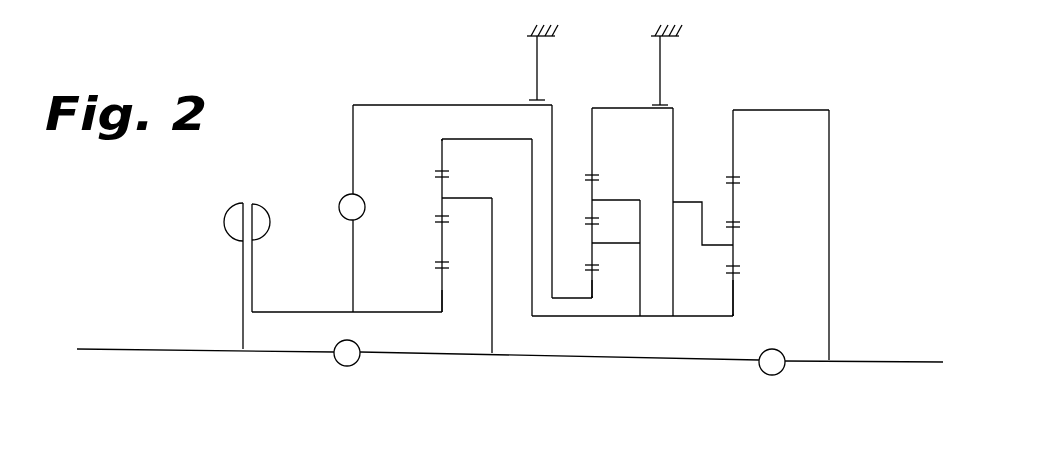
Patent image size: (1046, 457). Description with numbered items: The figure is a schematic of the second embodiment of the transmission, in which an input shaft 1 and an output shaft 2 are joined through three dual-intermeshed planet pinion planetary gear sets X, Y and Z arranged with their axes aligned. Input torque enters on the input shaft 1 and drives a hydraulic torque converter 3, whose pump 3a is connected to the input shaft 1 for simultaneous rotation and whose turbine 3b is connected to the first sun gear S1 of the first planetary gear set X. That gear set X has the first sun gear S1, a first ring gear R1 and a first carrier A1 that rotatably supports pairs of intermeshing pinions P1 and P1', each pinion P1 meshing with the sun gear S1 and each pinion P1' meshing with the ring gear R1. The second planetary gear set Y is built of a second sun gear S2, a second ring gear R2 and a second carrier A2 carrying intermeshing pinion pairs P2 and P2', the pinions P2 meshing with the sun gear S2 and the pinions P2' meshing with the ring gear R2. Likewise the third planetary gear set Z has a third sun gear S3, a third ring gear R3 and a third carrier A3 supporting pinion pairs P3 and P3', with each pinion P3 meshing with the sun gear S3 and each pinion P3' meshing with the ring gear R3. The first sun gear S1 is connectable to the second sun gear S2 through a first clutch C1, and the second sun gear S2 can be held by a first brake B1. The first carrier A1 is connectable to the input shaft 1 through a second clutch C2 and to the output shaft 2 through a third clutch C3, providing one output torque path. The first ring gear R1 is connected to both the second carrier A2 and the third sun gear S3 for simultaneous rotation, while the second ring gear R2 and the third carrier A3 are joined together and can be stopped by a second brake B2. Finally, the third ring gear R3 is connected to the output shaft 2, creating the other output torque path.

The input shaft 1 is at (133, 349).
The output shaft 2 is at (887, 362).
The hydraulic torque converter 3 is at (222, 223).
The pump 3a is at (233, 239).
The turbine 3b is at (270, 236).
The first clutch C1 is at (341, 198).
The second clutch C2 is at (357, 364).
The third clutch C3 is at (781, 372).
The first ring gear R1 is at (442, 152).
The pinion P1' is at (414, 206).
The first carrier A1 is at (492, 218).
The pinion P1 is at (413, 263).
The first sun gear S1 is at (440, 291).
The first brake B1 is at (533, 99).
The second brake B2 is at (664, 103).
The second ring gear R2 is at (592, 135).
The pinion P2' is at (620, 190).
The second carrier A2 is at (641, 217).
The pinion P2 is at (612, 258).
The second sun gear S2 is at (567, 298).
The third carrier A3 is at (702, 221).
The third sun gear S3 is at (733, 291).
The third ring gear R3 is at (735, 140).
The pinion P3' is at (767, 205).
The pinion P3 is at (761, 256).
The first planetary gear set X is at (450, 290).
The second planetary gear set Y is at (603, 283).
The third planetary gear set Z is at (741, 287).